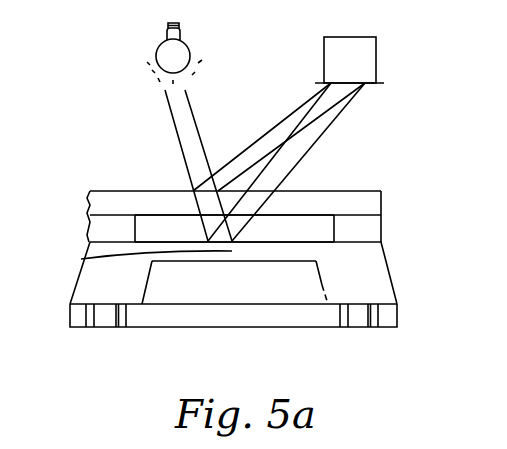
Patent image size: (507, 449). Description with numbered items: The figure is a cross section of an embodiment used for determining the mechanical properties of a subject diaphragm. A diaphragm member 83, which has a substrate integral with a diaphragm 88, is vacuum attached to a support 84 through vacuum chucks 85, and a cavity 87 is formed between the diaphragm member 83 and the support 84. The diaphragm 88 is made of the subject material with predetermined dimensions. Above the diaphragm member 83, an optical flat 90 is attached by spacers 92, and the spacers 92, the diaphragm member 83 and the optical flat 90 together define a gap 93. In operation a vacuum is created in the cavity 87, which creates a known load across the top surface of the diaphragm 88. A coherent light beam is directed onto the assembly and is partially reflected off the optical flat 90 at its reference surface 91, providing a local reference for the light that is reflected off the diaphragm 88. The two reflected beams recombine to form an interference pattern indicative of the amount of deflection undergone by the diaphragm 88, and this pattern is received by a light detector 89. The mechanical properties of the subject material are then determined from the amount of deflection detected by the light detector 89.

The diaphragm member 83 is at (406, 256).
The support 84 is at (416, 313).
The vacuum chucks 85 is at (90, 328).
The cavity 87 is at (219, 290).
The diaphragm 88 is at (141, 263).
The light detector 89 is at (337, 70).
The optical flat 90 is at (70, 192).
The reference surface 91 is at (363, 192).
The spacers 92 is at (124, 240).
The gap 93 is at (277, 240).